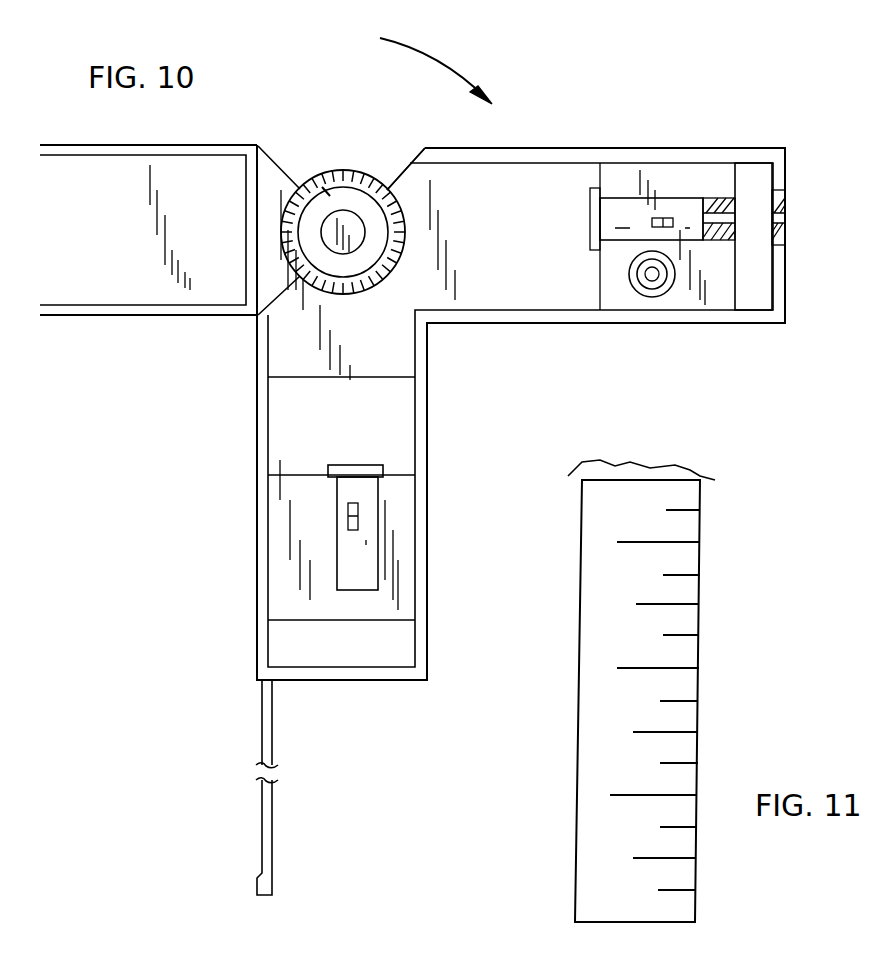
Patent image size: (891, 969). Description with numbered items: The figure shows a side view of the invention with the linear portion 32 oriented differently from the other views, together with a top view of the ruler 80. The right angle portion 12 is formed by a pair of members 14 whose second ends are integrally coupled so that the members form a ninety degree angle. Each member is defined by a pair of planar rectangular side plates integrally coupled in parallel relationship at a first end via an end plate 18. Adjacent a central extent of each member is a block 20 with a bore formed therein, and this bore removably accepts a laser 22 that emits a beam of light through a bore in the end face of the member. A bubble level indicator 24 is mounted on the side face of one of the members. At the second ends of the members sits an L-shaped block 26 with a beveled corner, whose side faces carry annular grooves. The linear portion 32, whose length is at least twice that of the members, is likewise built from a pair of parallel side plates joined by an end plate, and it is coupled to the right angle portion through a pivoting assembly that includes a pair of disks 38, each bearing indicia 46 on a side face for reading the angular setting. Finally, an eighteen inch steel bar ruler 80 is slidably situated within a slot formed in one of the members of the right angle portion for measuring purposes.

In FIG. 10, the right angle portion 12 is at (580, 157).
In FIG. 10, the members 14 is at (780, 324).
In FIG. 10, the end plate 18 is at (787, 268).
In FIG. 10, the block 20 is at (683, 175).
In FIG. 10, the laser 22 is at (365, 552).
In FIG. 10, the bubble level indicator 24 is at (652, 290).
In FIG. 10, the L-shaped block 26 is at (490, 170).
In FIG. 10, the linear portion 32 is at (200, 144).
In FIG. 10, the disks 38 is at (350, 170).
In FIG. 10, the indicia 46 is at (325, 190).
In FIG. 10, the steel bar ruler 80 is at (274, 822).
In FIG. 11, the steel bar ruler 80 is at (668, 625).